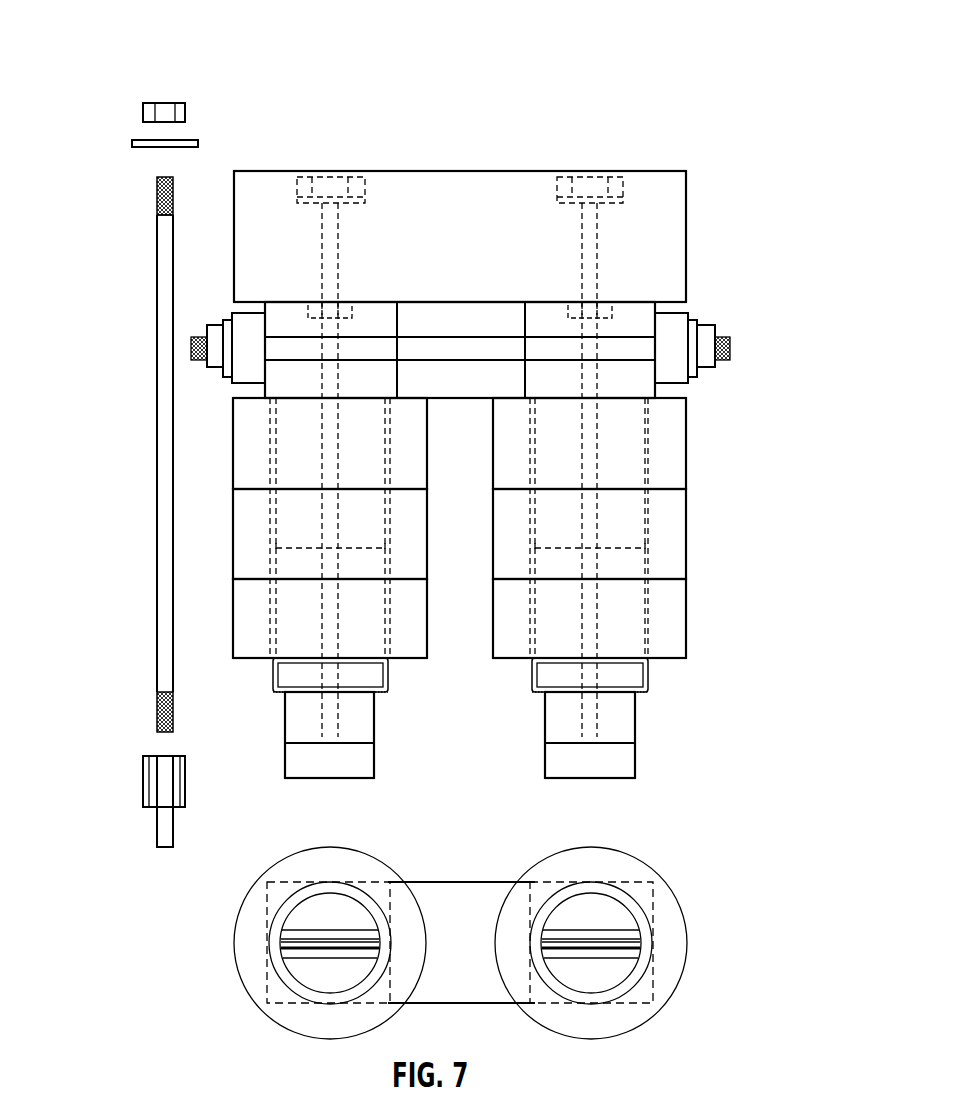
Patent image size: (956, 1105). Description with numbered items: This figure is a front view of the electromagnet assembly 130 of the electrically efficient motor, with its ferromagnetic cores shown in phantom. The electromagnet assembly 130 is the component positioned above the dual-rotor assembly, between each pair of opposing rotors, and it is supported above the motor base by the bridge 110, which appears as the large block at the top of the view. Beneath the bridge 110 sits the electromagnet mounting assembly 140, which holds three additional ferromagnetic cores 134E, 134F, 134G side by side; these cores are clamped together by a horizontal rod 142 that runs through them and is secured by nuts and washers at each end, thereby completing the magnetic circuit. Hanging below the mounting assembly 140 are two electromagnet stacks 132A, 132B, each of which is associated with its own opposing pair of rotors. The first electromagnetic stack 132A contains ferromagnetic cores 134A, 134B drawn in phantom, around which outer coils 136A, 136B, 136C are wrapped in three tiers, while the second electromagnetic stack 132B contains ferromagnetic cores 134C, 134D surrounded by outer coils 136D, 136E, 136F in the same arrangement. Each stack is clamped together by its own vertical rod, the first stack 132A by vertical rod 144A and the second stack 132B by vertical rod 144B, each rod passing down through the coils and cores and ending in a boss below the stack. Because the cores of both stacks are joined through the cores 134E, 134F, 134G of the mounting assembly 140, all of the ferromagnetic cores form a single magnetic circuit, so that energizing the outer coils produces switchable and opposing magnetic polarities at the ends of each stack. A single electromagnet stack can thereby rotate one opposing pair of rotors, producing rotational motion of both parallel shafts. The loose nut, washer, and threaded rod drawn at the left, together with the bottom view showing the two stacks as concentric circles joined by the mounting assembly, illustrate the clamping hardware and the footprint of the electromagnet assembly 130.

The electromagnet assembly 130 is at (120, 61).
The bridge 110 is at (658, 187).
The horizontal rod 142 is at (445, 353).
The ferromagnetic core 134E is at (293, 311).
The ferromagnetic core 134F is at (487, 320).
The ferromagnetic core 134G is at (630, 313).
The electromagnet mounting assembly 140 is at (741, 344).
The outer coil 136C is at (245, 417).
The outer coil 136B is at (253, 555).
The outer coil 136A is at (253, 648).
The outer coil 136D is at (668, 433).
The outer coil 136E is at (668, 538).
The outer coil 136F is at (668, 650).
The ferromagnetic core 134A is at (290, 615).
The ferromagnetic core 134B is at (290, 538).
The ferromagnetic core 134C is at (620, 632).
The ferromagnetic core 134D is at (620, 505).
The first electromagnetic stack 132A is at (287, 591).
The second electromagnetic stack 132B is at (639, 620).
The vertical rod 144A is at (330, 725).
The vertical rod 144B is at (590, 725).